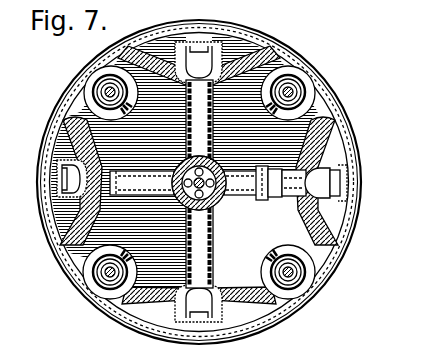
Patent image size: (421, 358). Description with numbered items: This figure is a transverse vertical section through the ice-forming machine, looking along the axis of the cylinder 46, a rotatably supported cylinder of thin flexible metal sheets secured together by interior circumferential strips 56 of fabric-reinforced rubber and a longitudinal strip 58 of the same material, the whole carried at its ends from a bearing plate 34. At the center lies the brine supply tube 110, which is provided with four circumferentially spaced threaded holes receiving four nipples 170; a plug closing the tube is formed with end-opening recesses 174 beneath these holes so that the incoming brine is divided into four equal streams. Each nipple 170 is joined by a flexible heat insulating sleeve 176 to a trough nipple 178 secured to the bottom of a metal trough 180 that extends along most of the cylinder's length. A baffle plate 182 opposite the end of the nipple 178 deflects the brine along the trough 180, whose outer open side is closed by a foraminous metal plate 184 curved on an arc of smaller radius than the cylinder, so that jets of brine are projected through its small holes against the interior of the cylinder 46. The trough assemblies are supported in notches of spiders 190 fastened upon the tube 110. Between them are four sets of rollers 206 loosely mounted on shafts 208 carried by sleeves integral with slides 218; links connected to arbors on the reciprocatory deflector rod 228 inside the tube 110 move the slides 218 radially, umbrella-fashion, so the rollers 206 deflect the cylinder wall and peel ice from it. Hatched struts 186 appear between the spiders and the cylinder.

The bearing plate 34 is at (198, 346).
The cylinder of thin flexible material 46 is at (252, 22).
The interior circumferential strips 56 is at (270, 57).
The longitudinal strip 58 is at (214, 339).
The tube 110 is at (215, 165).
The nipples 170 is at (259, 193).
The end-opening recesses 174 is at (181, 193).
The flexible heat insulating sleeve 176 is at (271, 197).
The trough nipple 178 is at (290, 170).
The trough 180 is at (346, 175).
The baffle plate 182 is at (340, 194).
The foraminous metal plate 184 is at (336, 186).
The spokes 186 is at (75, 123).
The spiders 190 is at (264, 296).
The rollers 206 is at (101, 89).
The shafts 208 is at (302, 95).
The slides 218 is at (313, 100).
The reciprocatory deflector rod 228 is at (217, 212).